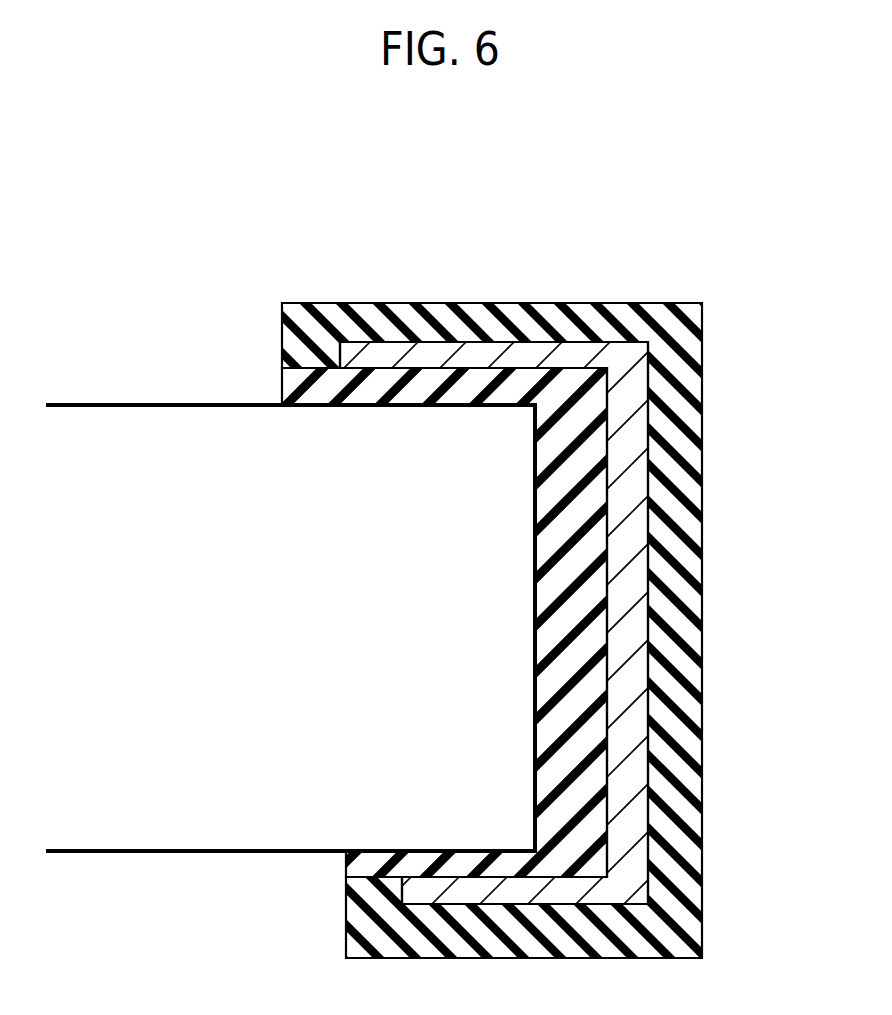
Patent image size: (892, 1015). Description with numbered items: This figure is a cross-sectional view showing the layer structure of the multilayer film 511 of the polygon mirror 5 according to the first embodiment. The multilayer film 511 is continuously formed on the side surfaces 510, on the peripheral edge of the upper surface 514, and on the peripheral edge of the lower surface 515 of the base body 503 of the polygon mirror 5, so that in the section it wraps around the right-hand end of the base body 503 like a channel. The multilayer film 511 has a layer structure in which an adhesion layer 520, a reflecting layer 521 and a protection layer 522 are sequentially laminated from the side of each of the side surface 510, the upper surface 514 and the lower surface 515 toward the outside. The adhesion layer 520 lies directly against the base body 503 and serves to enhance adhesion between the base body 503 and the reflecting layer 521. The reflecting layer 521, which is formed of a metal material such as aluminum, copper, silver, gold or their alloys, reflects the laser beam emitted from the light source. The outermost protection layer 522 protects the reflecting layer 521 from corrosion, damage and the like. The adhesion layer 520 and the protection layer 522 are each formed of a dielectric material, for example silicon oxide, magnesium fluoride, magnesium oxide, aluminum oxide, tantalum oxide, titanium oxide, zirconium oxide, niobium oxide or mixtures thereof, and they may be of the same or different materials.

The polygon mirror 5 is at (757, 346).
The base body 503 is at (91, 815).
The side surface 510 is at (536, 653).
The multilayer film 511 is at (565, 245).
The upper surface 514 is at (58, 403).
The lower surface 515 is at (257, 854).
The adhesion layer 520 is at (326, 382).
The reflecting layer 521 is at (428, 359).
The protection layer 522 is at (520, 326).